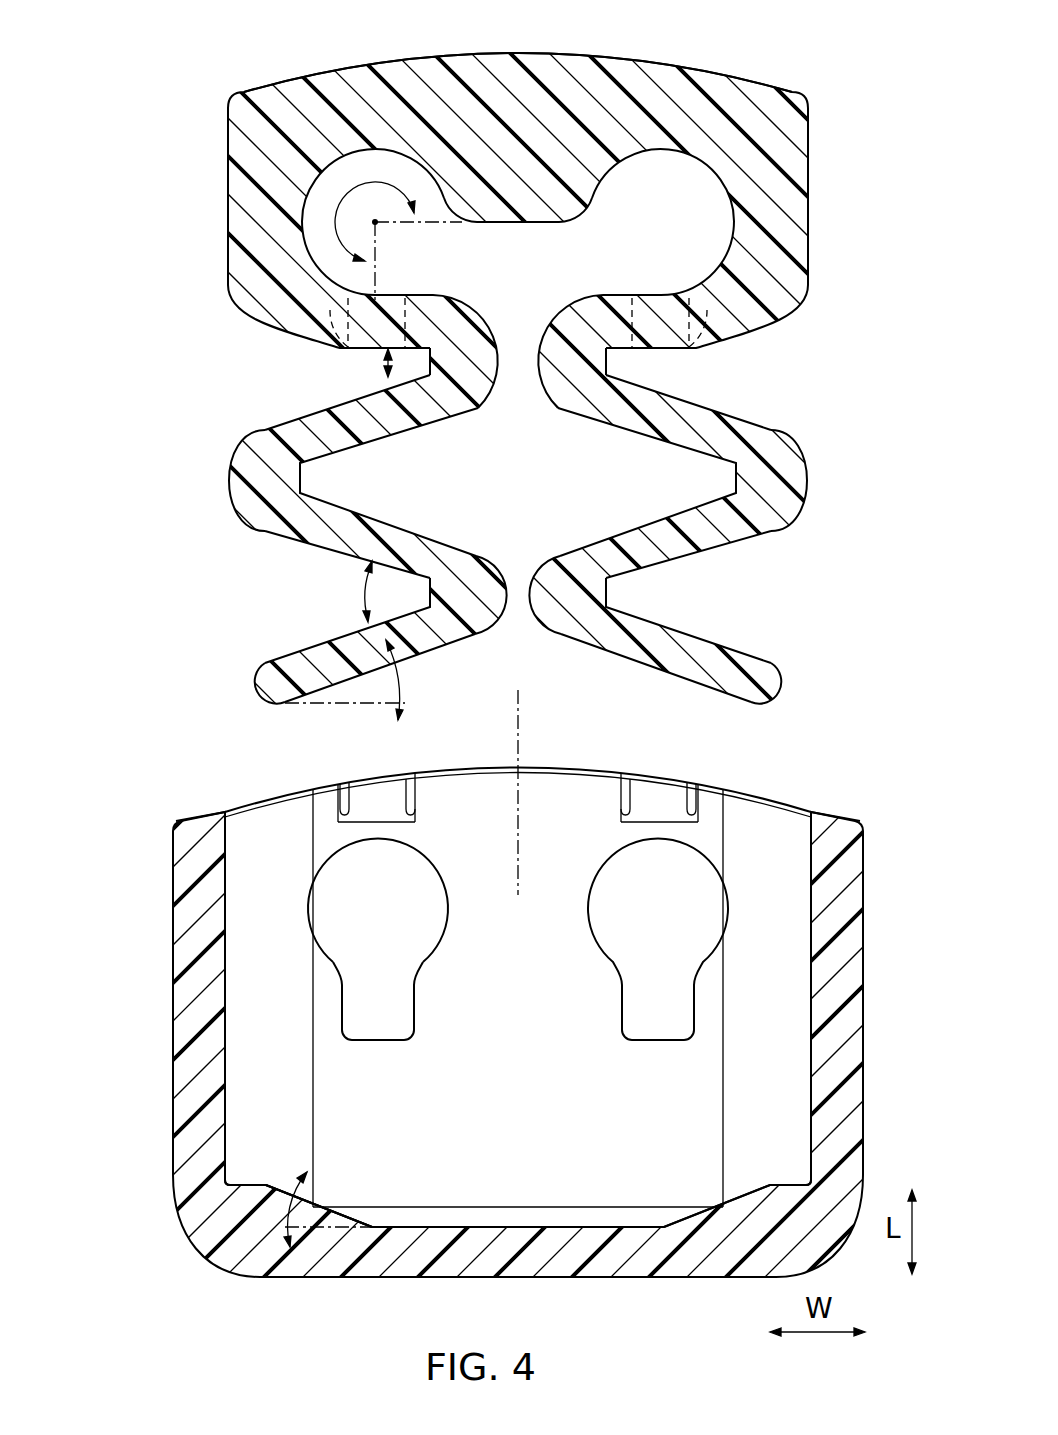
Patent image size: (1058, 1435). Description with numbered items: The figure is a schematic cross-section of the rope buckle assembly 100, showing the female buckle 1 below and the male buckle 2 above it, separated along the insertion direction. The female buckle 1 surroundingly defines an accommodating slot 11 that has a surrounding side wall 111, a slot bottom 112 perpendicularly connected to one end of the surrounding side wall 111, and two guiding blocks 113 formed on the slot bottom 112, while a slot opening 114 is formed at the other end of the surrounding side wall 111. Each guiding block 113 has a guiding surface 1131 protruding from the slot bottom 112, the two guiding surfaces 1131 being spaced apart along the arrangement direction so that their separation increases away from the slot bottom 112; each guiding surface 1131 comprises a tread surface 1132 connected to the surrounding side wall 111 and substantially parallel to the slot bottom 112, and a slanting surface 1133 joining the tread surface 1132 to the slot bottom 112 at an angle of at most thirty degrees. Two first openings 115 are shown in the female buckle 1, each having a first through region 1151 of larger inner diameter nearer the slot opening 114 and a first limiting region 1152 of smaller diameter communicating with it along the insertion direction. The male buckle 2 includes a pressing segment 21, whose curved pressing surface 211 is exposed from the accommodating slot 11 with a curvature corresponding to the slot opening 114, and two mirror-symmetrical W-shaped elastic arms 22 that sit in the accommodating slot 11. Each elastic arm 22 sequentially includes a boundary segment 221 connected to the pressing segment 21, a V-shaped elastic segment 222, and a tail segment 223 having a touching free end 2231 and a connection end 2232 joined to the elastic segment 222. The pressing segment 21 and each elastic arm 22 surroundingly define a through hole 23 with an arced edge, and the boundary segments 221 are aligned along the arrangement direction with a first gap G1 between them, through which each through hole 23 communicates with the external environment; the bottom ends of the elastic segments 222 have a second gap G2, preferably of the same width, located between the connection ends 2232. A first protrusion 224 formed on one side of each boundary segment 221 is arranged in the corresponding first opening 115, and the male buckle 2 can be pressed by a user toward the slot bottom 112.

The rope buckle assembly 100 is at (794, 27).
The female buckle 1 is at (851, 820).
The accommodating slot 11 is at (780, 1067).
The surrounding side wall 111 is at (170, 1028).
The slot bottom 112 is at (368, 1280).
The guiding block 113 is at (749, 1190).
The guiding surface 1131 is at (95, 1096).
The tread surface 1132 is at (250, 1178).
The slanting surface 1133 is at (345, 1205).
The slot opening 114 is at (242, 799).
The first opening 115 is at (725, 917).
The first through region 1151 is at (315, 903).
The first limiting region 1152 is at (348, 1004).
The male buckle 2 is at (883, 255).
The pressing segment 21 is at (810, 252).
The pressing surface 211 is at (537, 50).
The elastic arm 22 is at (800, 446).
The boundary segment 221 is at (428, 294).
The elastic segment 222 is at (234, 459).
The tail segment 223 is at (310, 647).
The touching free end 2231 is at (256, 702).
The connection end 2232 is at (490, 638).
The first protrusion 224 is at (345, 340).
The through hole 23 is at (315, 250).
The first gap G1 is at (526, 358).
The second gap G2 is at (526, 596).